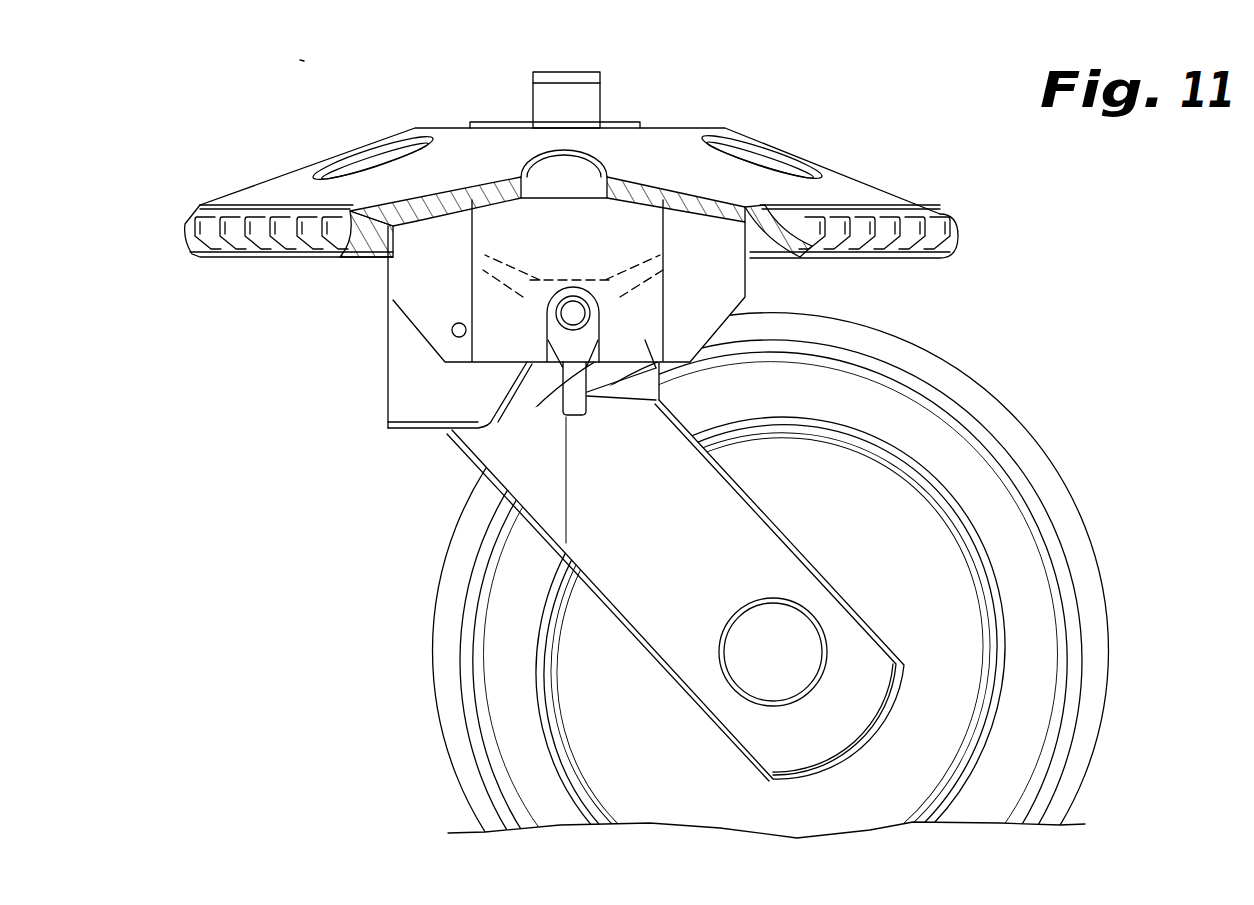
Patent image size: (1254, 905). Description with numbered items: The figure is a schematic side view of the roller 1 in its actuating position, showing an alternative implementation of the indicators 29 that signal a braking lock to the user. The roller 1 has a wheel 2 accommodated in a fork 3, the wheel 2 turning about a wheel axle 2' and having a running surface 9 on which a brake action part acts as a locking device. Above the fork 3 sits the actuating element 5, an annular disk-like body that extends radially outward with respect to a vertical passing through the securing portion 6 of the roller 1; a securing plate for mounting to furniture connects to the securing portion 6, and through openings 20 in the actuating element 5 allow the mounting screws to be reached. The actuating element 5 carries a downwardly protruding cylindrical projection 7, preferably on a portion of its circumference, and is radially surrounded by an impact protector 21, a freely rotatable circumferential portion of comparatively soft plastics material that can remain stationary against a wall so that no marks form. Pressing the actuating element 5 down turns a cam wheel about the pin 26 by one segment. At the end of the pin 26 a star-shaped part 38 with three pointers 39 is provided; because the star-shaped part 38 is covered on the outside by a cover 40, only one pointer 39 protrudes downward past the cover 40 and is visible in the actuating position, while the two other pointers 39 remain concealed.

The roller 1 is at (330, 112).
The wheel 2 is at (816, 609).
The wheel axle 2' is at (970, 652).
The fork 3 is at (668, 520).
The actuating element 5 is at (862, 182).
The securing portion 6 is at (637, 122).
The cylindrical projection 7 is at (395, 334).
The running surface 9 is at (1047, 488).
The through openings 20 is at (348, 167).
The impact protector 21 is at (205, 235).
The pin 26 is at (562, 313).
The indicators 29 is at (945, 247).
The star-shaped part 38 is at (527, 360).
The pointers 39 is at (568, 390).
The cover 40 is at (650, 343).